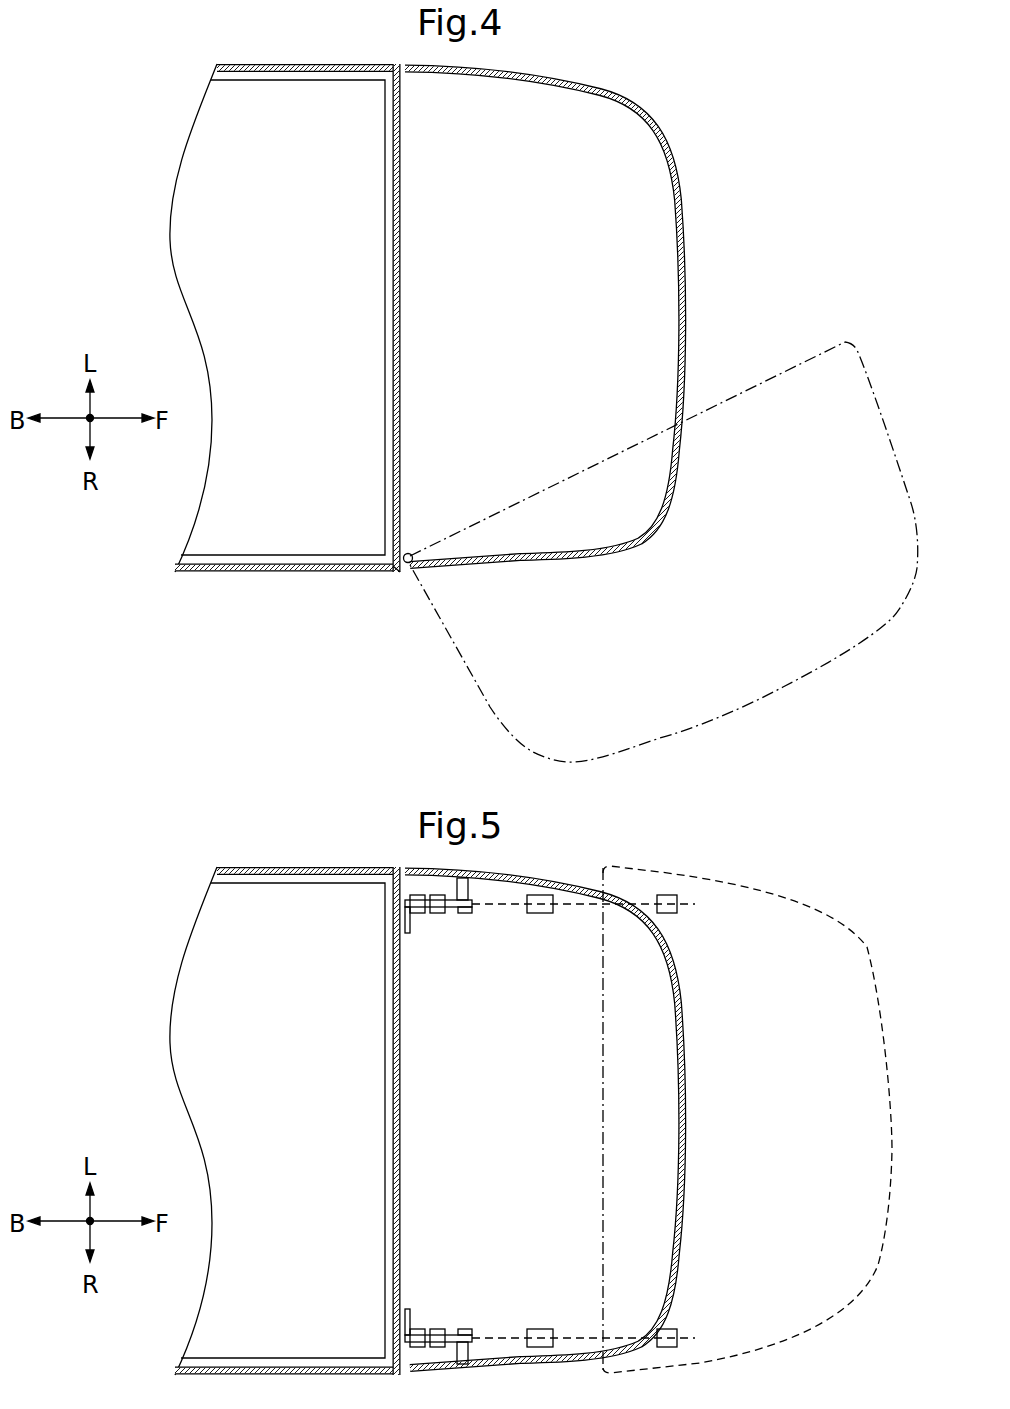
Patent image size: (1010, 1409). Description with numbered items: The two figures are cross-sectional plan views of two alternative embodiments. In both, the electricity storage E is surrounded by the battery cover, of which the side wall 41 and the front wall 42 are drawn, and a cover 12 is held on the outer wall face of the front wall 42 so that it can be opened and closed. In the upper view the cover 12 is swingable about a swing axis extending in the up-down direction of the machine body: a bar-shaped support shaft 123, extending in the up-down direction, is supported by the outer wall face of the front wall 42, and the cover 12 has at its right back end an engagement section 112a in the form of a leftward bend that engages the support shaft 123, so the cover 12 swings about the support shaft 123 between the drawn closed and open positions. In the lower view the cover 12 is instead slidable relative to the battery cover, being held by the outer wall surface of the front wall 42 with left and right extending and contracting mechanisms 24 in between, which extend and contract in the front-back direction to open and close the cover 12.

In FIG. 4, the cover 12 is at (684, 230).
In FIG. 5, the cover 12 is at (665, 1119).
In FIG. 4, the side wall 41 is at (295, 73).
In FIG. 5, the side wall 41 is at (287, 1121).
In FIG. 4, the front wall 42 is at (403, 290).
In FIG. 5, the front wall 42 is at (450, 1121).
In FIG. 5, the extending and contracting mechanism 24 is at (550, 1121).
In FIG. 4, the support shaft 123 is at (411, 554).
In FIG. 4, the engagement section 112a is at (400, 573).
In FIG. 4, the electricity storage E is at (208, 220).
In FIG. 5, the electricity storage E is at (246, 1121).